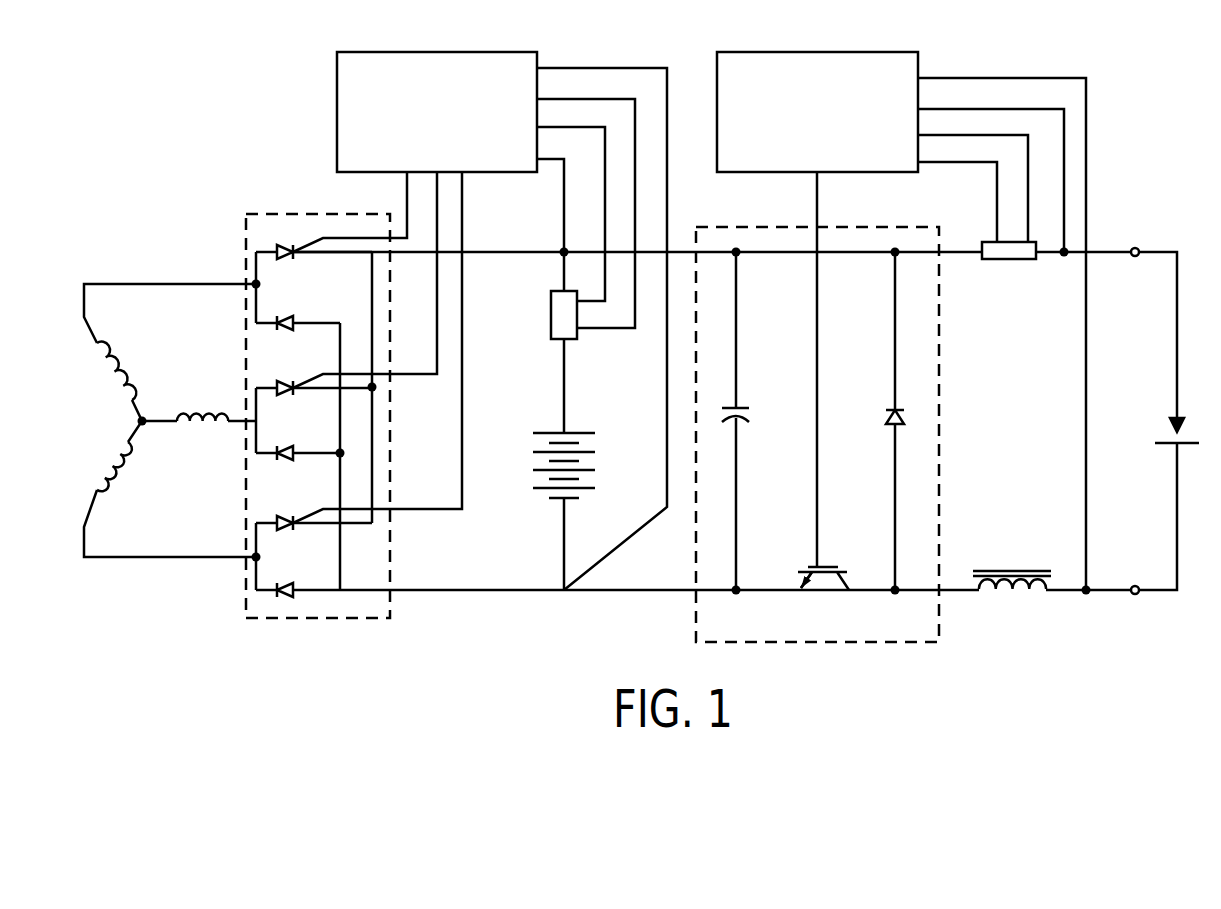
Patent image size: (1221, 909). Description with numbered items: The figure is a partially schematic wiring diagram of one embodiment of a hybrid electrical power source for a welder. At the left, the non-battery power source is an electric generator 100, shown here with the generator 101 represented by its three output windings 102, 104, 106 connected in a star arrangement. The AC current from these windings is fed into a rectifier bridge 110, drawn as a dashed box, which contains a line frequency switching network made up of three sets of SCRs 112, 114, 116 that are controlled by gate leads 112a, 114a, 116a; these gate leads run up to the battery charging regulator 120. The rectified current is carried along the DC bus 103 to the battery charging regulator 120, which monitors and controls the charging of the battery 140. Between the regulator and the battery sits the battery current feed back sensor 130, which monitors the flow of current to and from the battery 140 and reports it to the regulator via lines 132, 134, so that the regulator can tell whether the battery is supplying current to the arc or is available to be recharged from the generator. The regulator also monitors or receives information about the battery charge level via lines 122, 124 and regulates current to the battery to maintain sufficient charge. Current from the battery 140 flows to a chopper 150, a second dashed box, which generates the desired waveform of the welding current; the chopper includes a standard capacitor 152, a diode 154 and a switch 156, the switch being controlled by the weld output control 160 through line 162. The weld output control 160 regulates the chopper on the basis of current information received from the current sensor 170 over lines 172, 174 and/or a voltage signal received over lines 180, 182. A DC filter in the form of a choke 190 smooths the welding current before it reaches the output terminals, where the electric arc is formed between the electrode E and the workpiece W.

The electric generator 100 is at (190, 105).
The generator 101 is at (130, 265).
The output winding 102 is at (150, 345).
The output winding 104 is at (122, 476).
The output winding 106 is at (198, 410).
The rectifier bridge 110 is at (306, 619).
The SCR 112 is at (277, 560).
The gate lead 112a is at (305, 518).
The SCR 114 is at (277, 422).
The gate lead 114a is at (305, 383).
The SCR 116 is at (277, 288).
The gate lead 116a is at (310, 246).
The DC bus 103 is at (518, 518).
The battery charging regulator 120 is at (470, 52).
The line 122 is at (611, 62).
The line 124 is at (563, 193).
The battery current feed back sensor 130 is at (551, 310).
The line 132 is at (623, 329).
The line 134 is at (595, 302).
The battery 140 is at (548, 460).
The chopper 150 is at (817, 642).
The capacitor 152 is at (748, 414).
The diode 154 is at (884, 421).
The switch 156 is at (850, 575).
The weld output control 160 is at (820, 52).
The line 162 is at (820, 333).
The current sensor 170 is at (998, 262).
The line 172 is at (997, 181).
The line 174 is at (1028, 199).
The line 180 is at (1064, 212).
The line 182 is at (1086, 137).
The choke 190 is at (1008, 595).
The electrode E is at (1168, 426).
The workpiece W is at (1162, 446).